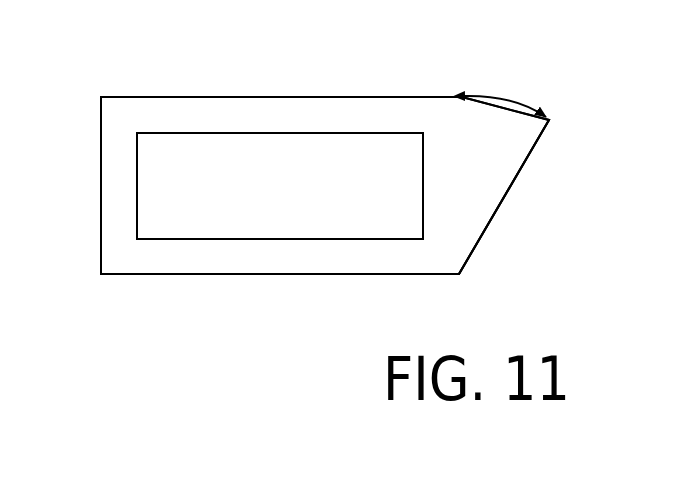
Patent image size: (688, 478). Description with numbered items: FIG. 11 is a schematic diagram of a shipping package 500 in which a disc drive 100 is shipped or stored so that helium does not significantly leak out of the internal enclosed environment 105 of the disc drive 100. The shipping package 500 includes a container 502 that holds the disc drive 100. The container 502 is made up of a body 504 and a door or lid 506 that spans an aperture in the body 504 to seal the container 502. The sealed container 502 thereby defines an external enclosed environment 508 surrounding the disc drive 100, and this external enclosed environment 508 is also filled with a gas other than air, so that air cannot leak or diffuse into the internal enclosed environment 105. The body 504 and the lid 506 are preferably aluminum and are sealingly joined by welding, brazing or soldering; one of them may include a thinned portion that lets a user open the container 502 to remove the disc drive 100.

The disc drive 100 is at (322, 132).
The enclosed environment 105 is at (412, 185).
The shipping package 500 is at (170, 357).
The container 502 is at (162, 300).
The body 504 is at (323, 274).
The lid 506 is at (506, 195).
The external enclosed environment 508 is at (178, 107).